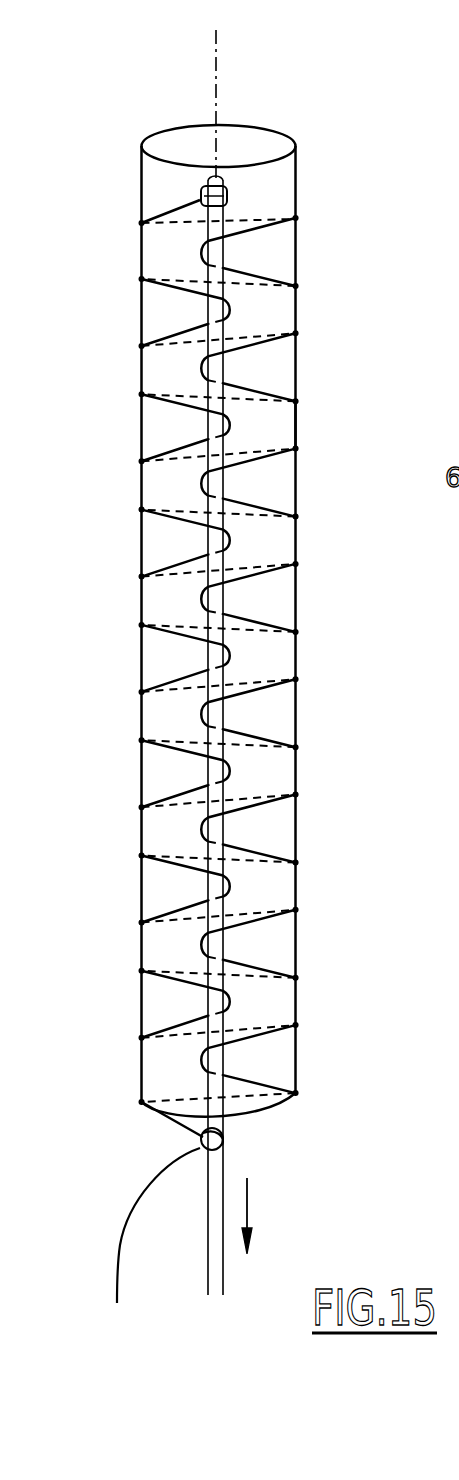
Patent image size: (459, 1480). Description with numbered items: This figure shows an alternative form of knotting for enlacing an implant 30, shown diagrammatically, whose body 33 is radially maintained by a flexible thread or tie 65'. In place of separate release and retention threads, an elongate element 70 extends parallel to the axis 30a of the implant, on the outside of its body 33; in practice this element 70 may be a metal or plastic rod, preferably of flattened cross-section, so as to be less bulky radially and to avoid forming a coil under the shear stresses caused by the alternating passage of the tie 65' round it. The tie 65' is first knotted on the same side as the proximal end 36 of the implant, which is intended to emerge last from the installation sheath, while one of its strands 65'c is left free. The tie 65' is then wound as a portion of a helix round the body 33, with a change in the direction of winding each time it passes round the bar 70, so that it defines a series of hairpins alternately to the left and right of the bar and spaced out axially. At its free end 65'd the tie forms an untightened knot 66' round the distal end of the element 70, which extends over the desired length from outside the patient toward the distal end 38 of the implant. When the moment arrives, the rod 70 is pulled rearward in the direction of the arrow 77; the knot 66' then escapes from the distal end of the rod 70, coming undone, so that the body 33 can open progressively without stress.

The axis 30a is at (216, 60).
The distal end 38 is at (295, 150).
The body 33 is at (273, 712).
The elongate element 70 is at (293, 422).
The proximal end 36 is at (297, 1092).
The flexible thread 65' is at (259, 677).
The free end 65'd is at (121, 221).
The untightened knot 66' is at (291, 190).
The implant 30 is at (307, 838).
The arrow 77 is at (250, 1202).
The free strand 65'c is at (170, 1243).